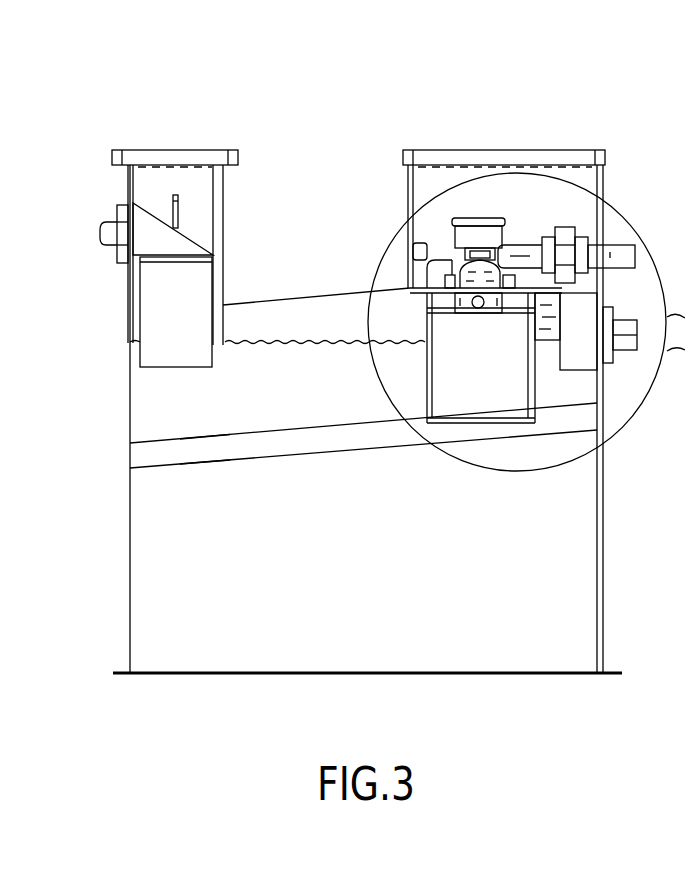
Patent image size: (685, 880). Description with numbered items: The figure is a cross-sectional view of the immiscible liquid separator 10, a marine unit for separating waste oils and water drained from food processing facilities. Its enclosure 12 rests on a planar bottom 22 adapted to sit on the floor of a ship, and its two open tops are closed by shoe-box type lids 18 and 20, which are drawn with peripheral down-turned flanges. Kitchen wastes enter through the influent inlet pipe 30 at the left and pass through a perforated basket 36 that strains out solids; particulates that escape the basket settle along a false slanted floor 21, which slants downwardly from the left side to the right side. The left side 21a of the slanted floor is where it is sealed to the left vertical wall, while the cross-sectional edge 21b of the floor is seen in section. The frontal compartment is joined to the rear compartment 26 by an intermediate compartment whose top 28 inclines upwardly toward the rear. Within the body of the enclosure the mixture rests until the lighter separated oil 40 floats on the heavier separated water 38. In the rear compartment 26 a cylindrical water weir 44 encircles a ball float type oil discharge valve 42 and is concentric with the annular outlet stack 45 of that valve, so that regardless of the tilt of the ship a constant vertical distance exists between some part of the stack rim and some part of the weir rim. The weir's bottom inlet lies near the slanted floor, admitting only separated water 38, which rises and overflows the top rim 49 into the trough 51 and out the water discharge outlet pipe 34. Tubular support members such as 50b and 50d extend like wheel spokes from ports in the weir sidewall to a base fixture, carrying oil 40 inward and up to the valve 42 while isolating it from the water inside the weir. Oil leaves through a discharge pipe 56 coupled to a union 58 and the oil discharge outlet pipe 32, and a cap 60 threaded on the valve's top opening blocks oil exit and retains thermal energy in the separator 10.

The immiscible liquid separator 10 is at (380, 62).
The enclosure 12 is at (605, 498).
The lid 18 is at (145, 150).
The lid 20 is at (425, 150).
The false slanted floor 21 is at (289, 435).
The left side of the false slanted floor 21a is at (203, 437).
The cross-sectional edge of the slanted floor 21b is at (200, 463).
The planar bottom 22 is at (353, 674).
The rear compartment 26 is at (603, 190).
The top of the intermediate compartment 28 is at (293, 297).
The influent inlet pipe 30 is at (112, 251).
The oil discharge outlet pipe 32 is at (622, 245).
The water discharge outlet pipe 34 is at (622, 319).
The perforated basket 36 is at (190, 368).
The separated water 38 is at (363, 410).
The separated oil 40 is at (413, 328).
The oil discharge valve 42 is at (497, 206).
The cylindrical water weir 44 is at (417, 279).
The annular outlet stack 45 is at (468, 252).
The top rim of the water weir 49 is at (415, 247).
The tubular support member 50b is at (442, 317).
The tubular support member 50d is at (522, 317).
The trough 51 is at (550, 339).
The discharge pipe 56 is at (515, 243).
The union 58 is at (566, 227).
The cap 60 is at (460, 213).